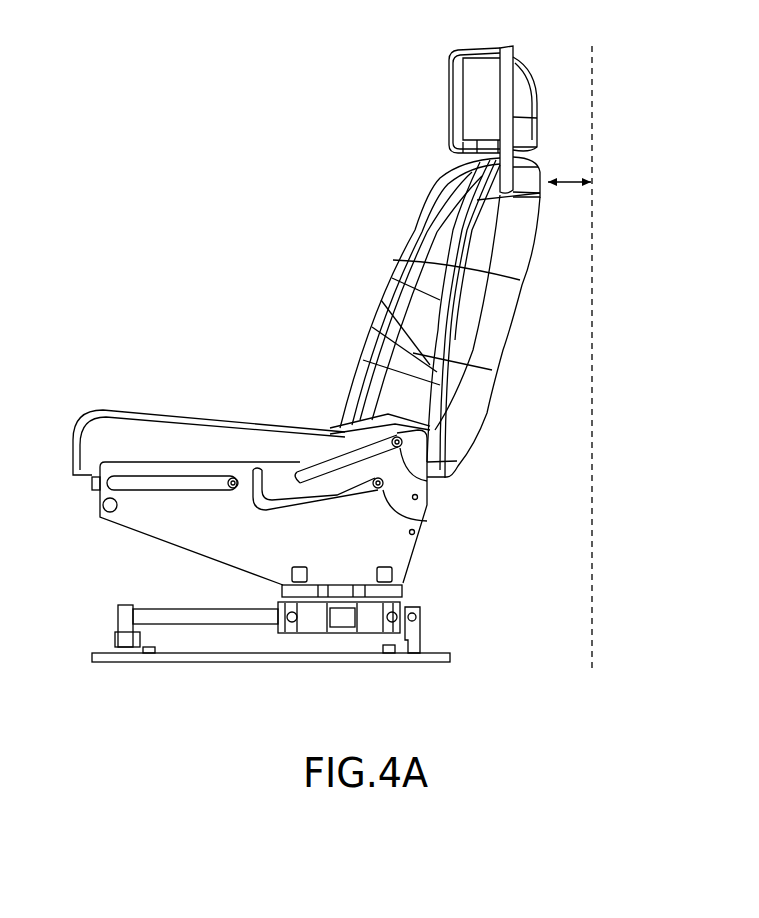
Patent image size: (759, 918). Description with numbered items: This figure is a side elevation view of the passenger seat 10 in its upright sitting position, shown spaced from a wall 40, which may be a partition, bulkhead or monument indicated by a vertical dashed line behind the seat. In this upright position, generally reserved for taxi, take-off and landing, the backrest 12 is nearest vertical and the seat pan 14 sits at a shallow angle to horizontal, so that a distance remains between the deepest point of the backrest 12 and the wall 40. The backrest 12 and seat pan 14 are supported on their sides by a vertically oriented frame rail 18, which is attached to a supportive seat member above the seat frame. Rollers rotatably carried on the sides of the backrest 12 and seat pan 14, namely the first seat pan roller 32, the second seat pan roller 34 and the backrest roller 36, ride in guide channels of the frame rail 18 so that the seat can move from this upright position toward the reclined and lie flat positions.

The passenger seat 10 is at (382, 66).
The backrest 12 is at (528, 250).
The seat pan 14 is at (185, 430).
The frame rail 18 is at (140, 522).
The first seat pan roller 32 is at (235, 480).
The second seat pan roller 34 is at (425, 521).
The backrest roller 36 is at (428, 478).
The wall 40 is at (592, 93).